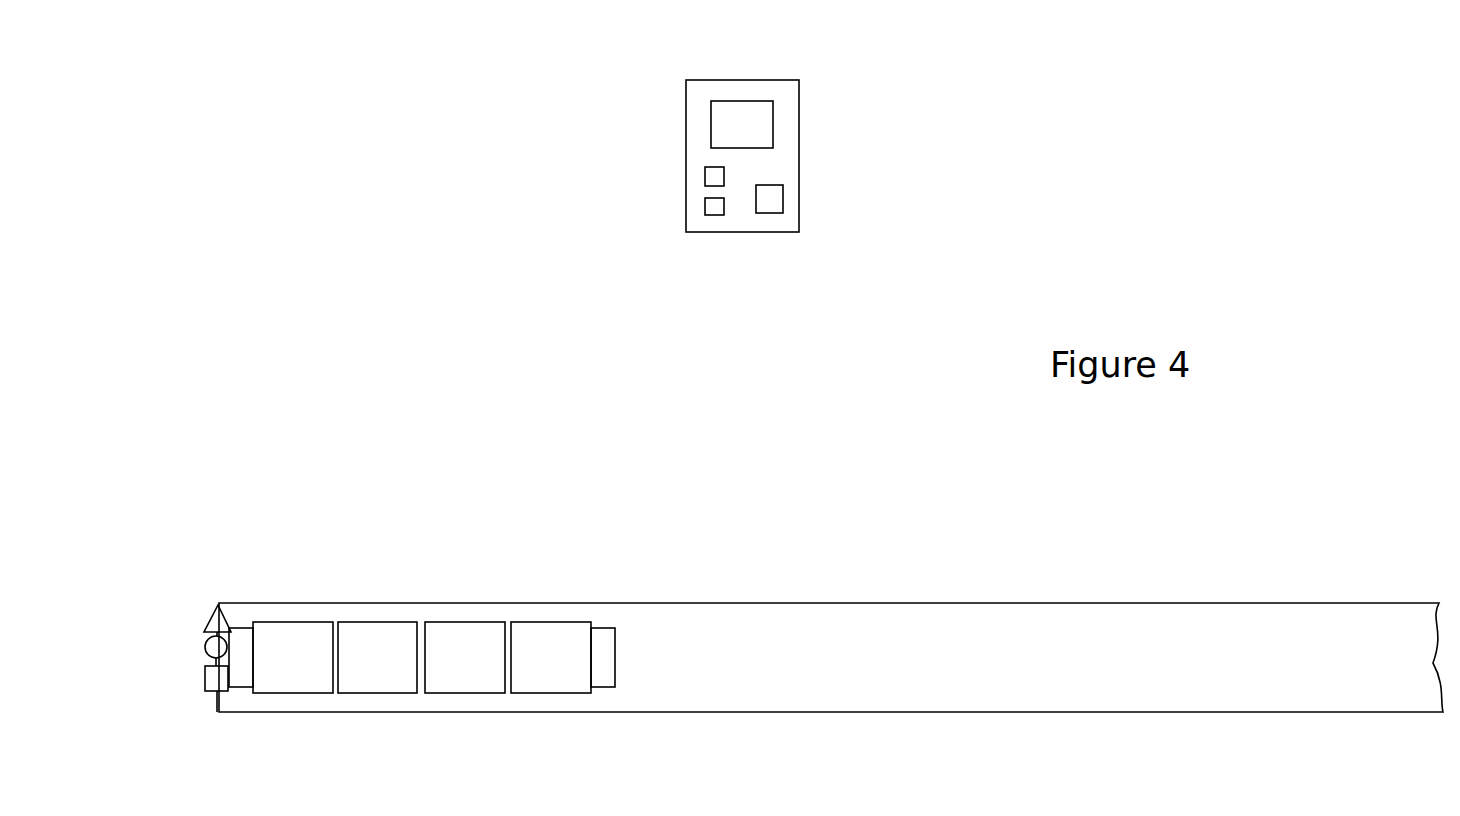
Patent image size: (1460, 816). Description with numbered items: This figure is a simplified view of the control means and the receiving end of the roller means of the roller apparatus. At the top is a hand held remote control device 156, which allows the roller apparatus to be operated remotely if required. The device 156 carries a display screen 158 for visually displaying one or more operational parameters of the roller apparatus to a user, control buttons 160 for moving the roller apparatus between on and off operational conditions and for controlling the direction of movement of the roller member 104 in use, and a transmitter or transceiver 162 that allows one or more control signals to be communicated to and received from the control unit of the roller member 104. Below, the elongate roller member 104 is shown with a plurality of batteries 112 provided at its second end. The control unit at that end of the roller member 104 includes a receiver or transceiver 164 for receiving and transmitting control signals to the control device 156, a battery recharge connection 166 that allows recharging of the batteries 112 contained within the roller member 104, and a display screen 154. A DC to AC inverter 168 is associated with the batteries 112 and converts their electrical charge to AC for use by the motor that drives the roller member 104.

The roller member 104 is at (967, 603).
The batteries 112 is at (368, 645).
The display screen 154 is at (217, 680).
The hand held remote control device 156 is at (815, 160).
The display screen 158 is at (762, 125).
The control buttons 160 is at (707, 177).
The transmitter or transceiver 162 is at (773, 195).
The receiver or transceiver 164 is at (213, 617).
The battery recharge connection 166 is at (210, 650).
The DC to AC inverter 168 is at (608, 648).